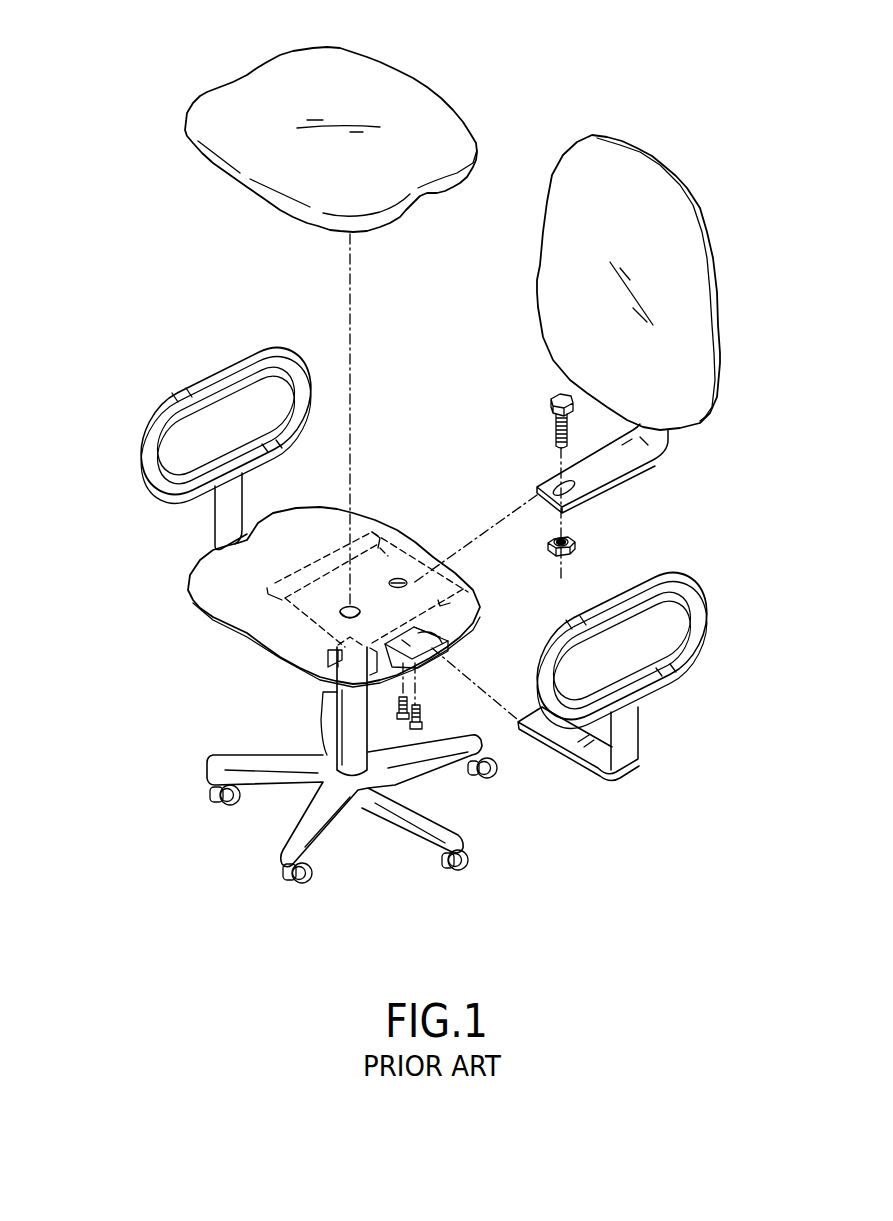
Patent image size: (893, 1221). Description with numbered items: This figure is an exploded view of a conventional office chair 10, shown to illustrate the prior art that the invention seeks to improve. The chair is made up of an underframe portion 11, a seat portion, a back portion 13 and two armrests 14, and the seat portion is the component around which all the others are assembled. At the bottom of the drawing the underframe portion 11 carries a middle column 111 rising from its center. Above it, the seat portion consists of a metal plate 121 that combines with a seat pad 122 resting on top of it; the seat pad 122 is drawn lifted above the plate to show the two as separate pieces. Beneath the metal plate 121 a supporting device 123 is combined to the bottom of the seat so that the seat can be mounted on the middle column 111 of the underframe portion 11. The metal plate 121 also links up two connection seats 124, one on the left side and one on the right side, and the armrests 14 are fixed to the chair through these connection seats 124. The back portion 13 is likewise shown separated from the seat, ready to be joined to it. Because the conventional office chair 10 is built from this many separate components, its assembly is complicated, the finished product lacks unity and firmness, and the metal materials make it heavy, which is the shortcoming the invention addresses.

The conventional office chair 10 is at (95, 112).
The underframe portion 11 is at (390, 813).
The middle column 111 is at (362, 737).
The metal plate 121 is at (235, 617).
The seat pad 122 is at (393, 93).
The supporting device 123 is at (398, 523).
The connection seat 124 is at (445, 641).
The back portion 13 is at (680, 255).
The armrest 14 is at (645, 718).